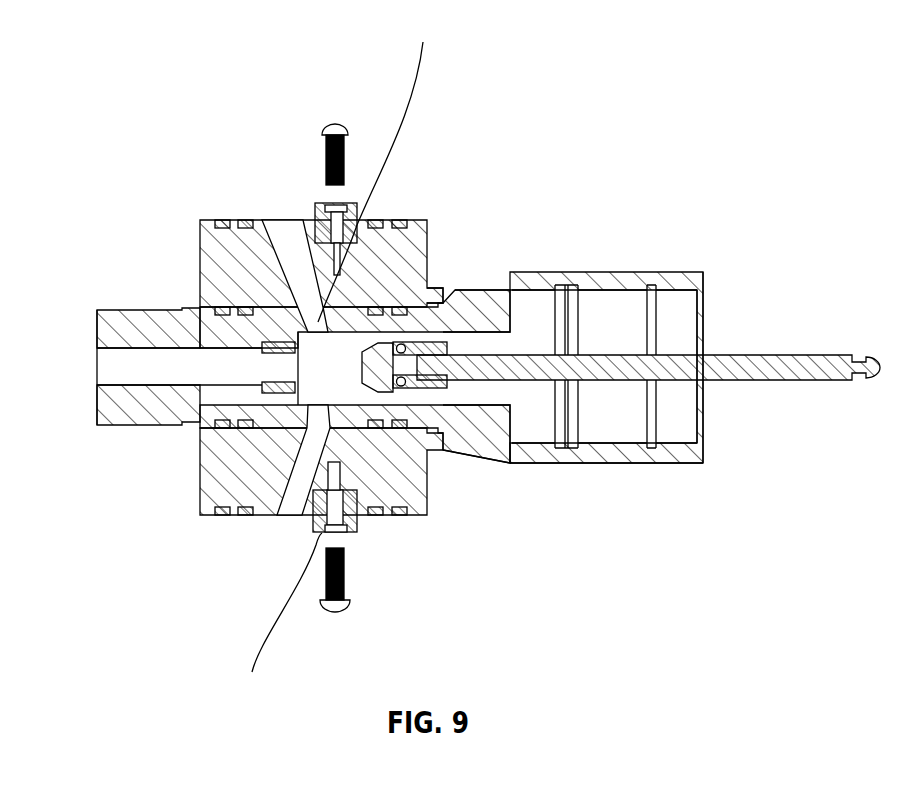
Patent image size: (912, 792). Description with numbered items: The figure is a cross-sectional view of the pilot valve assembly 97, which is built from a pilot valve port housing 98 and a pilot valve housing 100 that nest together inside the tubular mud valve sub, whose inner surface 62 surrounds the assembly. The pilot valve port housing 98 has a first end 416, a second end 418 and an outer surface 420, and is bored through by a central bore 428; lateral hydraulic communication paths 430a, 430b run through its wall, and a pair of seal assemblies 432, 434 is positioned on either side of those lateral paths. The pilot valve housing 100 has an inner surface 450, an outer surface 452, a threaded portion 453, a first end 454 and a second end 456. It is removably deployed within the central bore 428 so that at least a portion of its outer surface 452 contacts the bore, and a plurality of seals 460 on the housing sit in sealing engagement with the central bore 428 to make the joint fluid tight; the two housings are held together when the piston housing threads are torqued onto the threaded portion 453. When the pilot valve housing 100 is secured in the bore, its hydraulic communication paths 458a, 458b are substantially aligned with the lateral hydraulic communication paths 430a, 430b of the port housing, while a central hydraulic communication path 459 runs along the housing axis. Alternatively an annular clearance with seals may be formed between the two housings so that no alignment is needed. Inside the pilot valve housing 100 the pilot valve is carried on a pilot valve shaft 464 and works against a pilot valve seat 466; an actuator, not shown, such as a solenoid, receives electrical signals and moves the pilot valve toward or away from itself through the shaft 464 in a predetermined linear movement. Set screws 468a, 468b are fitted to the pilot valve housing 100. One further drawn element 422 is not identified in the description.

The pilot valve assembly 97 is at (236, 83).
The pilot valve port housing 98 is at (418, 220).
The pilot valve housing 100 is at (616, 272).
The inner surface 62 is at (360, 370).
The first end 416 is at (200, 238).
The second end 418 is at (431, 492).
The outer surface 420 is at (259, 219).
The housing plate 422 is at (215, 325).
The central bore 428 is at (97, 375).
The lateral hydraulic communication path 430a is at (287, 222).
The lateral hydraulic communication path 430b is at (280, 517).
The seal assembly 432 is at (572, 176).
The seal assembly 434 is at (222, 517).
The inner surface 450 is at (467, 330).
The outer surface 452 is at (626, 463).
The threaded portion 453 is at (140, 428).
The first end 454 is at (97, 330).
The second end 456 is at (703, 280).
The hydraulic communication path 458a is at (374, 220).
The hydraulic communication path 458b is at (318, 414).
The central hydraulic communication path 459 is at (110, 365).
The seals 460 is at (216, 219).
The pilot valve shaft 464 is at (481, 388).
The pilot valve seat 466 is at (260, 345).
The set screw 468a is at (334, 122).
The set screw 468b is at (336, 614).